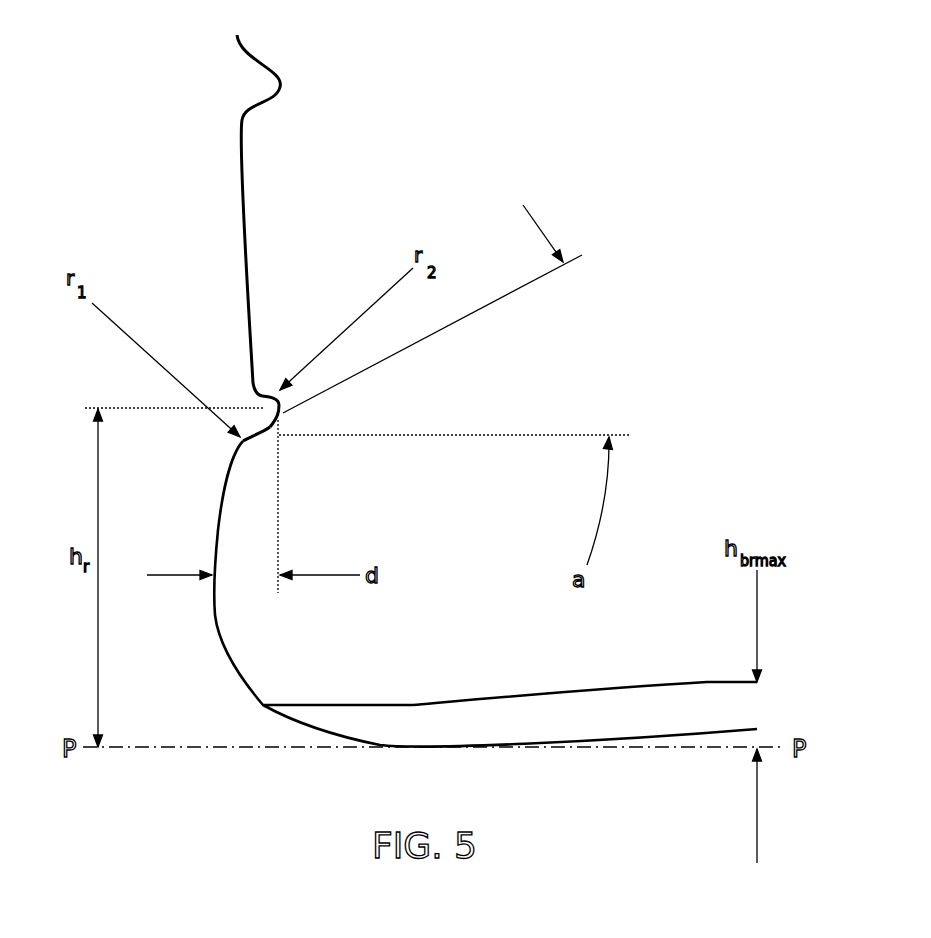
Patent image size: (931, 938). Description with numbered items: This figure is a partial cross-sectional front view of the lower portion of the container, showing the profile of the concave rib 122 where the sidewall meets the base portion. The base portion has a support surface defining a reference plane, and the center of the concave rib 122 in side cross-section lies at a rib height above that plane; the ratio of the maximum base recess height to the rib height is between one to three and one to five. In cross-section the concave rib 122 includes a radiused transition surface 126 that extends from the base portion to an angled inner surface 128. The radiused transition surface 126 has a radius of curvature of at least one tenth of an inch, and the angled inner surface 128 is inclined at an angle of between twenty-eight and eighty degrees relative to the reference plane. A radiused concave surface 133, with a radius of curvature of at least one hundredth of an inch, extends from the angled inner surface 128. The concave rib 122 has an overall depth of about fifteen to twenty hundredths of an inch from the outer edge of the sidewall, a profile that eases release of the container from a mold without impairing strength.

The concave rib 122 is at (272, 393).
The radiused transition surface 126 is at (242, 440).
The angled inner surface 128 is at (264, 428).
The radiused concave surface 133 is at (275, 397).